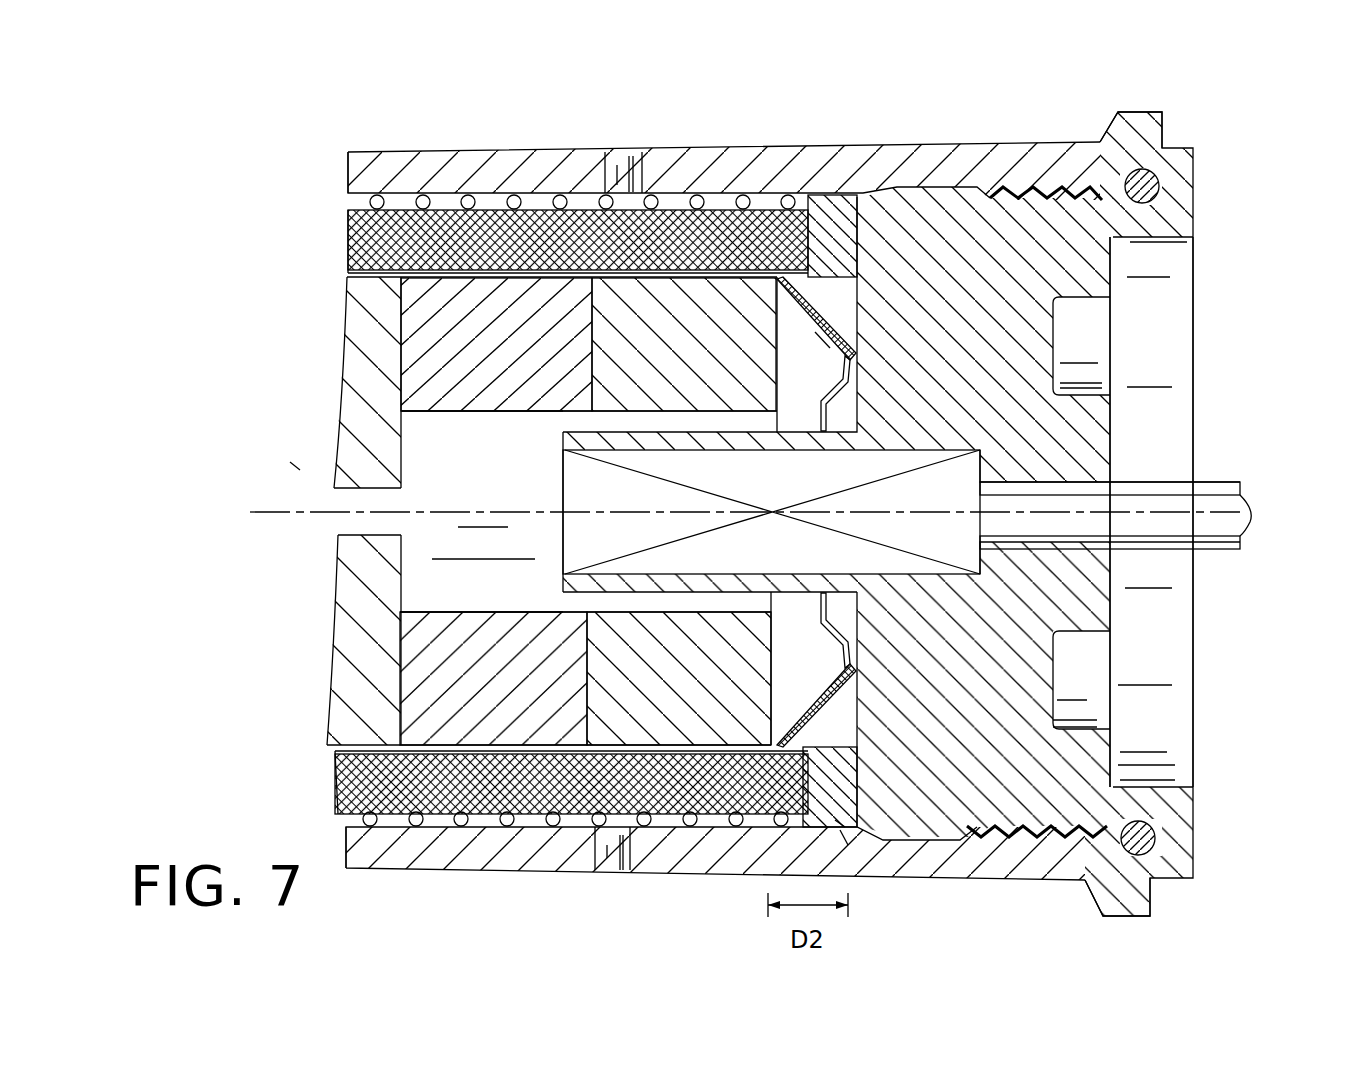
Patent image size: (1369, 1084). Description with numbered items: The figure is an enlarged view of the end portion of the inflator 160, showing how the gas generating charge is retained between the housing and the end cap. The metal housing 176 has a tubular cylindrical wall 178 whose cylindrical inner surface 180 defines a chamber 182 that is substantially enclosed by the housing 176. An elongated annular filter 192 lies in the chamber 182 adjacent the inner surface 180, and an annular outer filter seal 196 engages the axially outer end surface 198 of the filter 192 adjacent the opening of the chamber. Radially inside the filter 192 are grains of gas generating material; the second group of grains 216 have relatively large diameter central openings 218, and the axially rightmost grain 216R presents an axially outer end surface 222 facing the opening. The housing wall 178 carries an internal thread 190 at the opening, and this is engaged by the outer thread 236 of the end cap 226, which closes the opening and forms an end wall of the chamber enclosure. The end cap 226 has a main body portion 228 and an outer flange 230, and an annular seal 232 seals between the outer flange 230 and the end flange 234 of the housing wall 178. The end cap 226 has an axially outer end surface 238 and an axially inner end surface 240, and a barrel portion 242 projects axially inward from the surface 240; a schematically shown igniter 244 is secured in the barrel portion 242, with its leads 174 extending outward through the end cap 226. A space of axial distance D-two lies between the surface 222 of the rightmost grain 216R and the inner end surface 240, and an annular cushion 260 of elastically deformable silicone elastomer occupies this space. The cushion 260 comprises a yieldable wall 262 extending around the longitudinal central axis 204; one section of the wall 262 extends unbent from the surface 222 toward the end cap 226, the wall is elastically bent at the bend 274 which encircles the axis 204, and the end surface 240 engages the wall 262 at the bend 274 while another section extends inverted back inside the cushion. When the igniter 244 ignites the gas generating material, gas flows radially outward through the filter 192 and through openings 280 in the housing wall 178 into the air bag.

The inflator 160 is at (290, 462).
The leads 174 is at (1232, 484).
The housing 176 is at (468, 875).
The tubular cylindrical wall 178 is at (928, 165).
The cylindrical inner surface 180 is at (433, 202).
The chamber 182 is at (720, 200).
The internal thread 190 is at (1030, 838).
The annular filter 192 is at (348, 250).
The outer filter seal 196 is at (840, 830).
The axially outer end surface 198 is at (835, 820).
The longitudinal central axis 204 is at (280, 512).
The second group of grains 216 is at (437, 358).
The rightmost grain 216R is at (658, 688).
The central openings 218 is at (433, 450).
The axially outer end surface 222 is at (777, 693).
The end cap 226 is at (1113, 315).
The main body portion 228 is at (967, 650).
The outer flange 230 is at (1193, 150).
The annular seal 232 is at (1152, 190).
The end flange 234 is at (1163, 112).
The outer thread 236 is at (1060, 190).
The axially outer end surface 238 is at (1193, 845).
The axially inner end surface 240 is at (852, 707).
The barrel portion 242 is at (590, 442).
The igniter 244 is at (592, 496).
The annular cushion 260 is at (812, 290).
The yieldable wall 262 is at (815, 332).
The bend 274 is at (855, 365).
The openings 280 is at (625, 160).